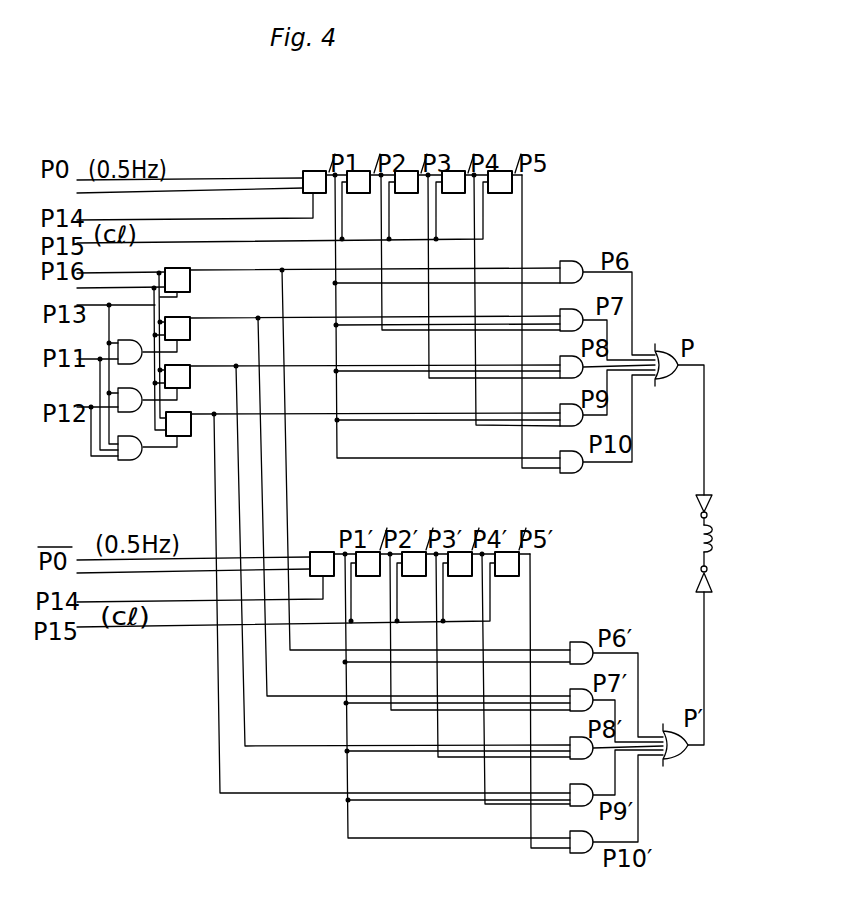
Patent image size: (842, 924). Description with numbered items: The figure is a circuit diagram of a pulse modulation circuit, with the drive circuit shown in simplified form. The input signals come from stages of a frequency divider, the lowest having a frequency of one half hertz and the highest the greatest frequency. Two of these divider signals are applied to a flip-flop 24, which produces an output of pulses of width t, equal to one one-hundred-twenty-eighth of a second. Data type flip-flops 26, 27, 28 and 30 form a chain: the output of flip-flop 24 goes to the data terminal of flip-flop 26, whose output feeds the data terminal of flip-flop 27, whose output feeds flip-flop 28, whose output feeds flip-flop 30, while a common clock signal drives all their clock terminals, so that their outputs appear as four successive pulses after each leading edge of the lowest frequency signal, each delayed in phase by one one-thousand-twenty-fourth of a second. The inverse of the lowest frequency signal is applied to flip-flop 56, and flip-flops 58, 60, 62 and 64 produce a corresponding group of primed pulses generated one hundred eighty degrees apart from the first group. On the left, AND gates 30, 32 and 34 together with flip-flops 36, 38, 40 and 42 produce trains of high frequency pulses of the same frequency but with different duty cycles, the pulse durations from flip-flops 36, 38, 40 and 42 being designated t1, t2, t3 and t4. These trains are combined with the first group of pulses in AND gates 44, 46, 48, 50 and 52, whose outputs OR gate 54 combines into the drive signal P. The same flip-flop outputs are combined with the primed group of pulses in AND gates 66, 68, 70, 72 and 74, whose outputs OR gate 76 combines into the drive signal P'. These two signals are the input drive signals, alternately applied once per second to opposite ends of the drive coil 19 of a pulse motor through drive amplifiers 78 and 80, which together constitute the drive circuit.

The flip-flop 24 is at (314, 168).
The data type flip-flop 26 is at (358, 168).
The data type flip-flop 27 is at (406, 168).
The data type flip-flop 28 is at (453, 168).
The data type flip-flop 30 is at (499, 168).
The AND gate 32 is at (118, 399).
The AND gate 34 is at (133, 461).
The flip-flop 36 is at (190, 283).
The flip-flop 38 is at (190, 330).
The flip-flop 40 is at (190, 378).
The flip-flop 42 is at (188, 437).
The AND gate 44 is at (568, 284).
The AND gate 46 is at (568, 332).
The AND gate 48 is at (568, 379).
The AND gate 50 is at (568, 427).
The AND gate 52 is at (568, 474).
The OR gate 54 is at (668, 383).
The flip-flop 56 is at (327, 548).
The flip-flop 58 is at (365, 548).
The flip-flop 60 is at (411, 548).
The flip-flop 62 is at (457, 548).
The flip-flop 64 is at (504, 548).
The AND gate 66 is at (578, 665).
The AND gate 68 is at (578, 712).
The AND gate 70 is at (578, 760).
The AND gate 72 is at (578, 807).
The AND gate 74 is at (578, 854).
The OR gate 76 is at (676, 759).
The drive amplifier 78 is at (695, 503).
The drive coil 19 is at (700, 540).
The drive amplifier 80 is at (696, 583).